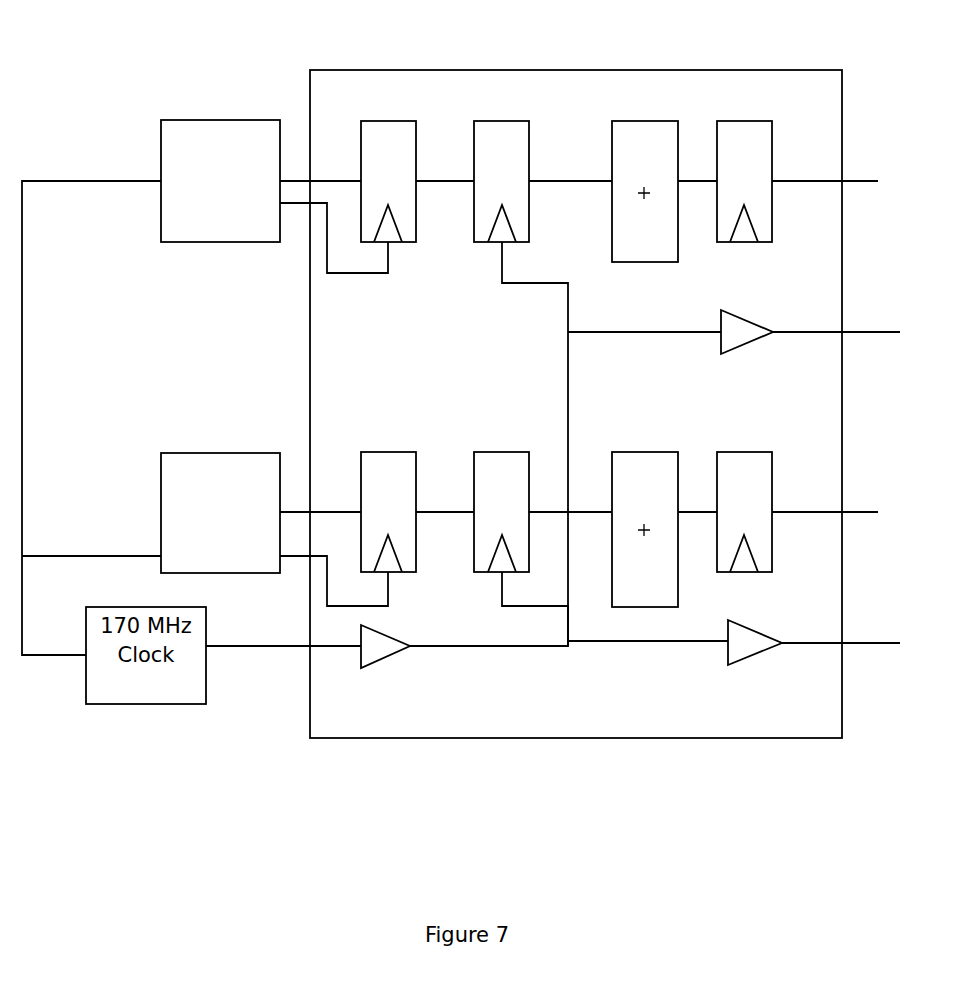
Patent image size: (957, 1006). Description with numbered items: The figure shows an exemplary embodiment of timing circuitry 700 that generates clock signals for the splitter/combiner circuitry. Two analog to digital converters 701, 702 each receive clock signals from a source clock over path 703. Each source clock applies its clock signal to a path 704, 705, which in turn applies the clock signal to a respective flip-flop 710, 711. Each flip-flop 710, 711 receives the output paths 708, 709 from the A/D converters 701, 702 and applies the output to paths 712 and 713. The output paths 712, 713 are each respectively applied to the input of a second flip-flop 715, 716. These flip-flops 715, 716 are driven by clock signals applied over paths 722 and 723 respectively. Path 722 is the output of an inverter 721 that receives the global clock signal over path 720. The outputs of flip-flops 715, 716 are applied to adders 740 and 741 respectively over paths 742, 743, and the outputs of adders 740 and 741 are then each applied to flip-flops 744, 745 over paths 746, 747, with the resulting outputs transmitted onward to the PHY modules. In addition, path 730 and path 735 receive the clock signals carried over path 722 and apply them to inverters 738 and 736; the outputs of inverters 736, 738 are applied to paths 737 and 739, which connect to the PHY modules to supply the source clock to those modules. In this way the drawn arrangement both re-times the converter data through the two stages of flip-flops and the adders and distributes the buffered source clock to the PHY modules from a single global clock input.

The timing circuitry 700 is at (567, 46).
The analog to digital converter 701 is at (220, 181).
The analog to digital converter 702 is at (220, 513).
The path 703 is at (24, 385).
The path 704 is at (358, 276).
The path 705 is at (322, 589).
The output path 708 is at (325, 180).
The output path 709 is at (325, 511).
The flip-flop 710 is at (378, 120).
The flip-flop 711 is at (383, 451).
The output path 712 is at (432, 180).
The output path 713 is at (433, 511).
The second flip-flop 715 is at (499, 120).
The second flip-flop 716 is at (504, 451).
The path 720 is at (253, 647).
The inverter 721 is at (380, 666).
The path 722 is at (467, 647).
The path 723 is at (500, 585).
The path 730 is at (645, 333).
The path 735 is at (617, 642).
The inverter 736 is at (753, 656).
The path 737 is at (882, 645).
The inverter 738 is at (748, 343).
The path 739 is at (882, 334).
The adder 740 is at (636, 120).
The adder 741 is at (641, 451).
The path 742 is at (553, 180).
The path 743 is at (576, 511).
The flip-flop 744 is at (738, 120).
The flip-flop 745 is at (745, 451).
The path 746 is at (686, 180).
The path 747 is at (686, 511).